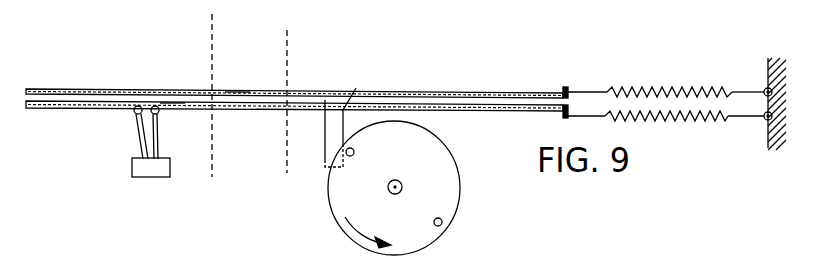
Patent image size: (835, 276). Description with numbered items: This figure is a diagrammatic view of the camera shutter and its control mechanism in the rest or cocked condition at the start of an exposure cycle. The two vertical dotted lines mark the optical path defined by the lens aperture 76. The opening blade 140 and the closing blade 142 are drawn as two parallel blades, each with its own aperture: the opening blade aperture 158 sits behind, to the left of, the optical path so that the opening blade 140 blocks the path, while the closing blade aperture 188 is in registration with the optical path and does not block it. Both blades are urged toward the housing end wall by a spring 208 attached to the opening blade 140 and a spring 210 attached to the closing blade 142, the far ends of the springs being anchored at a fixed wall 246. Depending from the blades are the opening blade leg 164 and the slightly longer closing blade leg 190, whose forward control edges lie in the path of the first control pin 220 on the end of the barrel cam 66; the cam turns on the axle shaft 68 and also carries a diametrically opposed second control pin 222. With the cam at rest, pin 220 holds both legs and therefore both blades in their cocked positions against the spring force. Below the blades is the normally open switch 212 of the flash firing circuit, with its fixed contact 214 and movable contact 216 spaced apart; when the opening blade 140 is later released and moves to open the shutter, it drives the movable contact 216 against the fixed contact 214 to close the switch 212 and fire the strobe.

The lens aperture 76 is at (287, 53).
The opening blade aperture 158 is at (173, 104).
The closing blade aperture 188 is at (245, 73).
The closing blade 142 is at (508, 92).
The opening blade 140 is at (485, 111).
The movable contact 216 is at (136, 126).
The fixed contact 214 is at (159, 124).
The switch 212 is at (124, 173).
The opening blade leg 164 is at (325, 132).
The closing blade leg 190 is at (327, 160).
The first control pin 220 is at (354, 151).
The second control pin 222 is at (442, 220).
The axle shaft 68 is at (396, 194).
The barrel cam 66 is at (459, 158).
The spring 210 is at (648, 87).
The spring 208 is at (680, 121).
The fixed support 246 is at (768, 60).